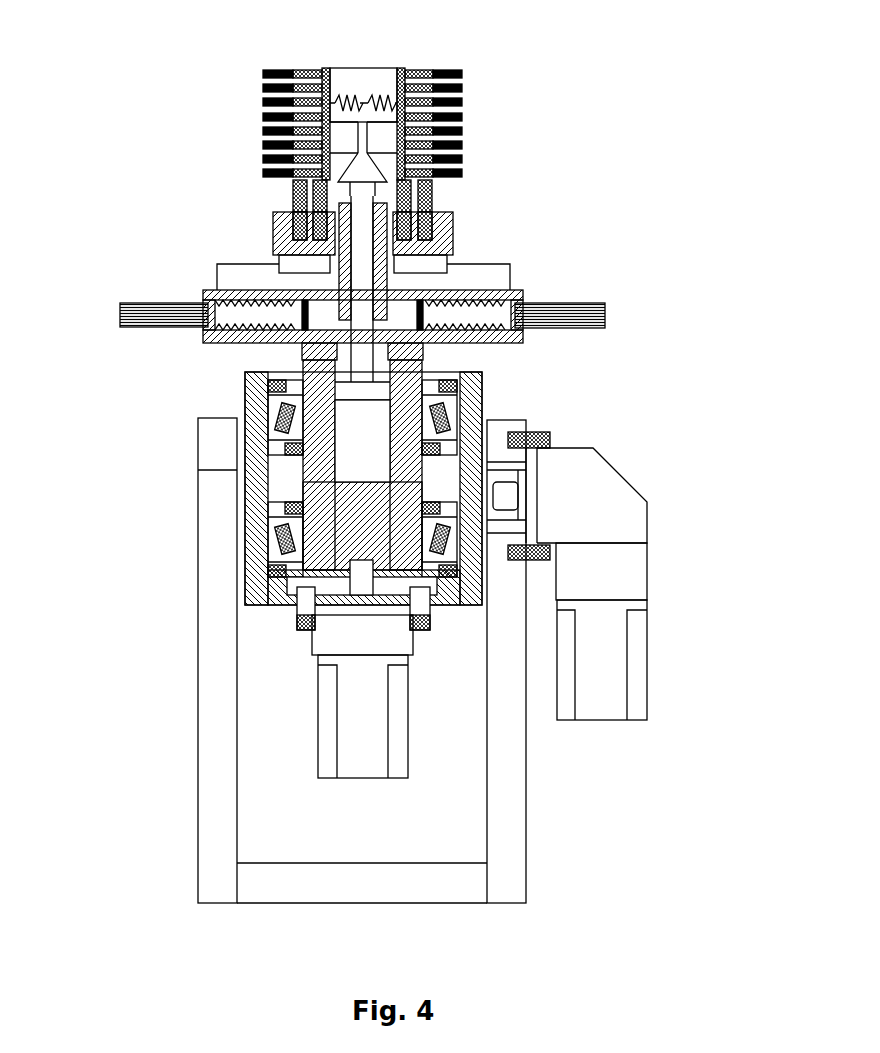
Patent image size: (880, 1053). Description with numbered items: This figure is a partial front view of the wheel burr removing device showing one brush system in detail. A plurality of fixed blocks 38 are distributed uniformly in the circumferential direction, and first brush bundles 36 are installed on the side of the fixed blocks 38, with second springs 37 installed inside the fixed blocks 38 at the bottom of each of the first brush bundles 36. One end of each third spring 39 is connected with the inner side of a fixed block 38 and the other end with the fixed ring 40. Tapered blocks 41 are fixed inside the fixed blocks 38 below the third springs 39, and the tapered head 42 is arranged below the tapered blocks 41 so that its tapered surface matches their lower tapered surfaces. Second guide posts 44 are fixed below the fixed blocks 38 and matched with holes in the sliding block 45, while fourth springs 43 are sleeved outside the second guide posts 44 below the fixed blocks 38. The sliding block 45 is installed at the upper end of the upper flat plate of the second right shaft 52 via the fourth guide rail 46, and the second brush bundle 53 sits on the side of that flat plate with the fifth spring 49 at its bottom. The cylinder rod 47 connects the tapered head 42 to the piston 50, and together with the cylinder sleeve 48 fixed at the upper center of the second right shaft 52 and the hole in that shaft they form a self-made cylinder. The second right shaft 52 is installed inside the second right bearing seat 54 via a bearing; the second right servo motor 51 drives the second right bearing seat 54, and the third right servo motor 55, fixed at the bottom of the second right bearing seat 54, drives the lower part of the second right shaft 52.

The first brush bundles 36 is at (462, 70).
The second springs 37 is at (462, 82).
The fixed blocks 38 is at (462, 101).
The third spring 39 is at (386, 105).
The fixed ring 40 is at (400, 122).
The tapered blocks 41 is at (384, 135).
The tapered head 42 is at (369, 164).
The fourth springs 43 is at (470, 268).
The second guide posts 44 is at (493, 287).
The sliding block 45 is at (456, 222).
The fourth guide rail 46 is at (385, 242).
The cylinder rod 47 is at (363, 268).
The cylinder sleeve 48 is at (330, 288).
The fifth spring 49 is at (332, 356).
The piston 50 is at (500, 425).
The second right servo motor 51 is at (600, 578).
The second right shaft 52 is at (458, 533).
The second brush bundle 53 is at (165, 314).
The second right bearing seat 54 is at (262, 497).
The third right servo motor 55 is at (353, 672).